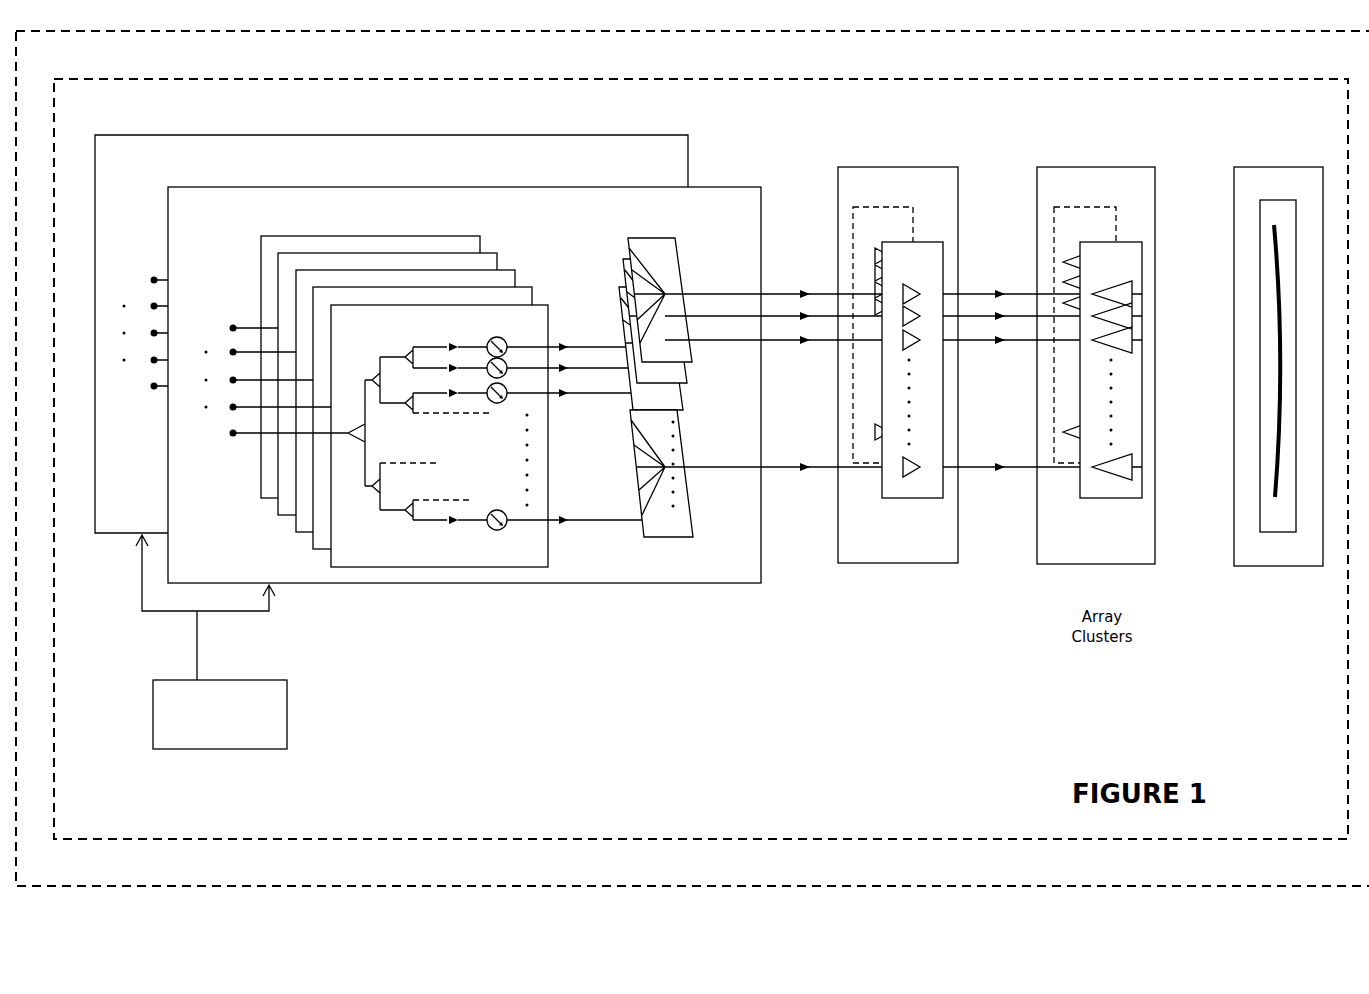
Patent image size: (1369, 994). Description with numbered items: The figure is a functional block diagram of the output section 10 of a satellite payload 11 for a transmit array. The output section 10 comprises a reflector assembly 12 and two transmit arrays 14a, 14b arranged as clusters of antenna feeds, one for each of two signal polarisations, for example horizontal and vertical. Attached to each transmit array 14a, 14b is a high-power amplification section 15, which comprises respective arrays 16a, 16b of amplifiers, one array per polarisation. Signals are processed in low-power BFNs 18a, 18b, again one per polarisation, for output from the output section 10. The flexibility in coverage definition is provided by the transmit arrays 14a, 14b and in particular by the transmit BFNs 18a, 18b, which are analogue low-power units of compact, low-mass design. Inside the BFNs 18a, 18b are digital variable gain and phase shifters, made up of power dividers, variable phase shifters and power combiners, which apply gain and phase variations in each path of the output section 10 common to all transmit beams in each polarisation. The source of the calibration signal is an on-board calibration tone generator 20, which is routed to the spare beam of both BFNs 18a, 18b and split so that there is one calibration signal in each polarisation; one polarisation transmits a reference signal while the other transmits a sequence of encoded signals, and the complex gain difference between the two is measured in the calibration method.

The output section 10 is at (596, 838).
The satellite payload 11 is at (620, 885).
The reflector assembly 12 is at (1274, 200).
The transmit array 14a is at (1110, 500).
The transmit array 14b is at (1083, 207).
The high-power amplification section 15 is at (856, 565).
The array of amplifiers 16a is at (918, 500).
The array of amplifiers 16b is at (883, 207).
The low-power BFN 18a is at (683, 584).
The low-power BFN 18b is at (690, 152).
The calibration tone generator 20 is at (288, 706).